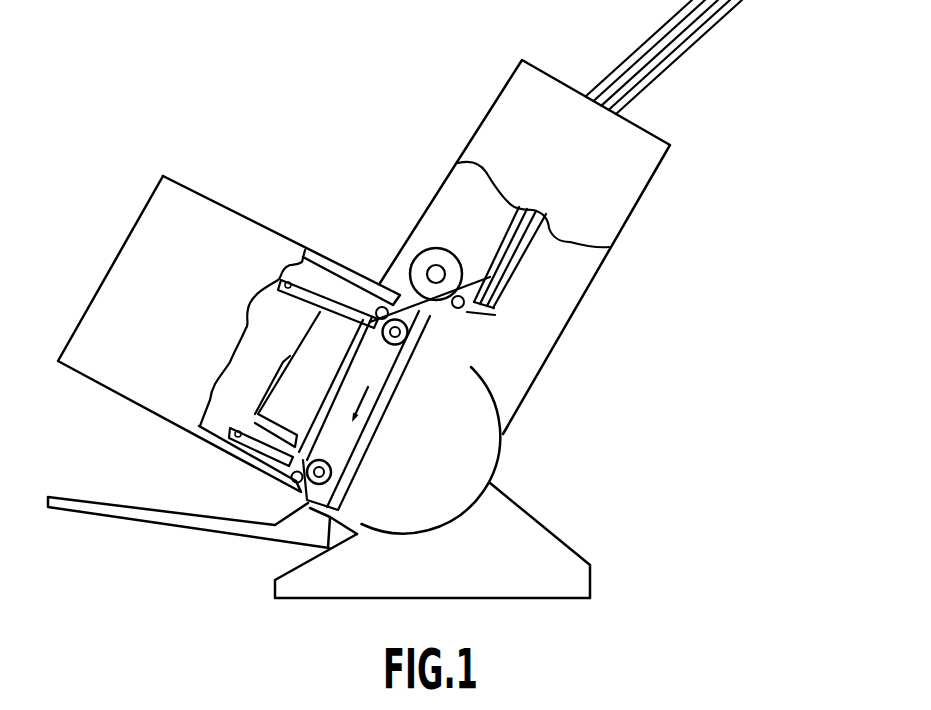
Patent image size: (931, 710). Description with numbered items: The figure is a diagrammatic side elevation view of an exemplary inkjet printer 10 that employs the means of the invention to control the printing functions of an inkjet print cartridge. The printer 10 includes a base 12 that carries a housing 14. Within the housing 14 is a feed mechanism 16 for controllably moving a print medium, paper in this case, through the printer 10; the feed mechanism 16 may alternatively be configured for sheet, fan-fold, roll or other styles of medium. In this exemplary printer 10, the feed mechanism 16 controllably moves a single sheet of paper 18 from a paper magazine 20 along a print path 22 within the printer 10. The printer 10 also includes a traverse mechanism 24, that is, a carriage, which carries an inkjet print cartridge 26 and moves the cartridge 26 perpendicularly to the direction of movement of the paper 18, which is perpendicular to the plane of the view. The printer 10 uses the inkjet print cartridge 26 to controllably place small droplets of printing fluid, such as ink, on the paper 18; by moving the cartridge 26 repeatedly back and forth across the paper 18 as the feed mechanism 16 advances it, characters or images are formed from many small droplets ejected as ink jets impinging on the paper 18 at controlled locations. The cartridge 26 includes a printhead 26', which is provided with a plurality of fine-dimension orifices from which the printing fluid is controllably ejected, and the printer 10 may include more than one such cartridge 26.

The inkjet printer 10 is at (295, 124).
The base 12 is at (548, 540).
The housing 14 is at (490, 440).
The feed mechanism 16 is at (406, 253).
The paper 18 is at (365, 368).
The paper magazine 20 is at (502, 238).
The print path 22 is at (370, 405).
The traverse mechanism 24 is at (236, 392).
The inkjet print cartridge 26 is at (329, 395).
The printhead 26' is at (364, 409).